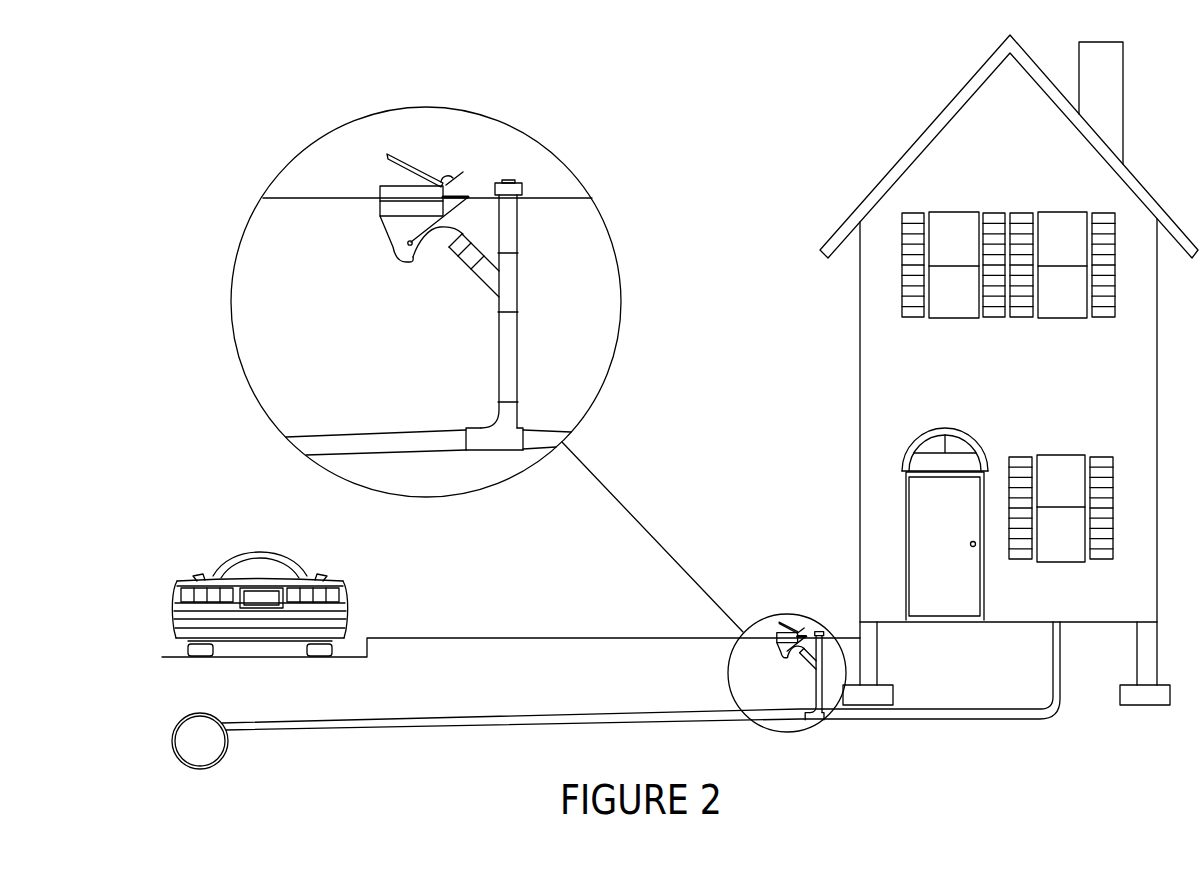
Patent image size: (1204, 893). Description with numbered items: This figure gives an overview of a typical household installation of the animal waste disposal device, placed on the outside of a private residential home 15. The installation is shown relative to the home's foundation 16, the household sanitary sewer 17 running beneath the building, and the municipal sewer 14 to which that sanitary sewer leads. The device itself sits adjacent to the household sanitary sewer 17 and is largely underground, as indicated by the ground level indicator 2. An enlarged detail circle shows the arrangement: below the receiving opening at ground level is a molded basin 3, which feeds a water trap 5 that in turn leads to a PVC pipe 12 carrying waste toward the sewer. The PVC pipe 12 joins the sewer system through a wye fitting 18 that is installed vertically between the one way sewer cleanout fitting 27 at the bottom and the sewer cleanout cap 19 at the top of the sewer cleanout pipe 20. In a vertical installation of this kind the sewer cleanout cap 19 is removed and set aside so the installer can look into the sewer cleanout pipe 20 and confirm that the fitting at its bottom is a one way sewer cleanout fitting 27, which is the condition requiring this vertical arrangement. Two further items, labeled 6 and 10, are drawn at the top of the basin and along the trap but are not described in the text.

The ground level indicator 2 is at (343, 198).
The molded basin 3 is at (398, 225).
The water trap 5 is at (417, 257).
The lid 6 is at (425, 172).
The drain conduit 10 is at (460, 250).
The PVC pipe 12 is at (468, 259).
The municipal sewer 14 is at (200, 769).
The home 15 is at (905, 367).
The foundation 16 is at (1160, 705).
The household sanitary sewer 17 is at (418, 433).
The wye fitting 18 is at (513, 273).
The sewer cleanout cap 19 is at (515, 182).
The sewer cleanout pipe 20 is at (513, 225).
The one way sewer cleanout fitting 27 is at (497, 442).